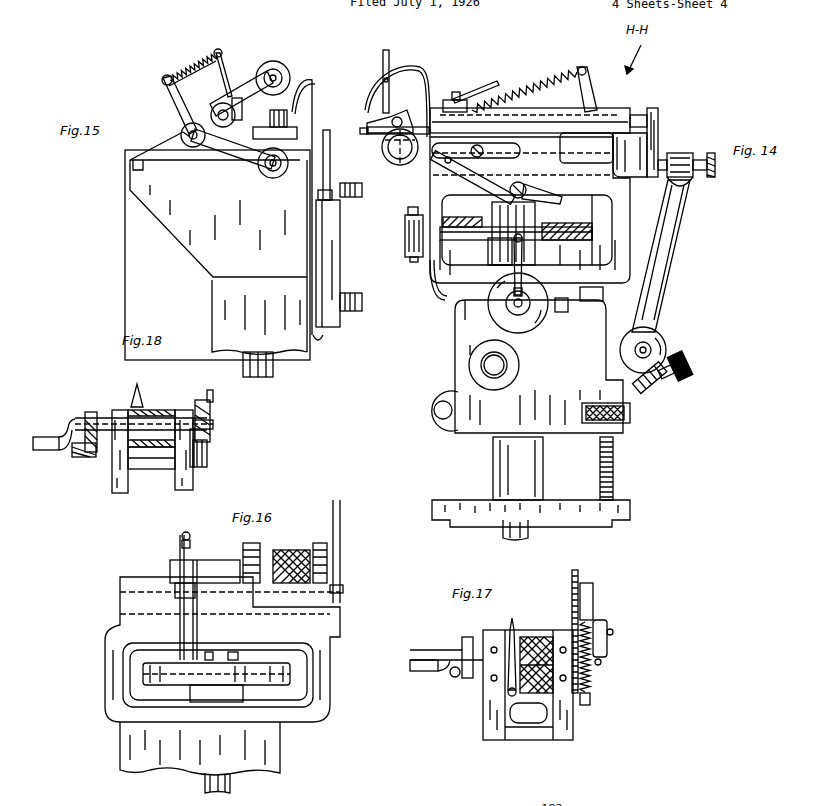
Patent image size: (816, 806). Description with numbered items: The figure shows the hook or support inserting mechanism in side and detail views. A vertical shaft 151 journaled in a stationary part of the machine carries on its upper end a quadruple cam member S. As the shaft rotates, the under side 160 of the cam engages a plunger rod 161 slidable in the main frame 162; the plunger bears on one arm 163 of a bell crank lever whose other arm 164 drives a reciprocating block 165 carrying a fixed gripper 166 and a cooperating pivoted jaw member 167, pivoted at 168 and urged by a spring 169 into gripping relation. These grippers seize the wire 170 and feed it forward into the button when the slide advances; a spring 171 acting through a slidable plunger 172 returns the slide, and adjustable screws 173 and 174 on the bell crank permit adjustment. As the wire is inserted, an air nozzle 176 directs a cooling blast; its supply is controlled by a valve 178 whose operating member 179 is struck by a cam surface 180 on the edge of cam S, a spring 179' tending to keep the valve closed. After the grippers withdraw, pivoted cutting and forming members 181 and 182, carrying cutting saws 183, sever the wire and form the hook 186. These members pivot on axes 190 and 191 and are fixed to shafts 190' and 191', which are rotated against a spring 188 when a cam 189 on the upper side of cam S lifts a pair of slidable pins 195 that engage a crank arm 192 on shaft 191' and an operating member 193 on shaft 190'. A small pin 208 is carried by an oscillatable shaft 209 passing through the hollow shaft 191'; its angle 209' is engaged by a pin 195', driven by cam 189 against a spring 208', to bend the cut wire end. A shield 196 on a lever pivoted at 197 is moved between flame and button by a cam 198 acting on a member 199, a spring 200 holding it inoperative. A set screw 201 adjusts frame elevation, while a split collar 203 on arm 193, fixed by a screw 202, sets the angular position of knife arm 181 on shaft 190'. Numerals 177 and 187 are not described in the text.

In FIG. 15, the vertical shaft 151 is at (276, 368).
In FIG. 16, the under side of cam 160 is at (285, 688).
In FIG. 14, the plunger rod 161 is at (587, 290).
In FIG. 15, the main frame 162 is at (215, 255).
In FIG. 16, the main frame 162 is at (313, 713).
In FIG. 14, the main frame 162 is at (468, 375).
In FIG. 14, the arm of bell crank lever 163 is at (652, 387).
In FIG. 14, the arm of bell crank lever 164 is at (679, 228).
In FIG. 14, the reciprocating block 165 is at (657, 115).
In FIG. 14, the fixed gripper 166 is at (378, 130).
In FIG. 14, the pivoted jaw member 167 is at (372, 116).
In FIG. 14, the pivot 168 is at (393, 118).
In FIG. 14, the spring 169 is at (562, 78).
In FIG. 14, the wire 170 is at (388, 147).
In FIG. 14, the spring 171 is at (486, 150).
In FIG. 14, the slidable plunger 172 is at (633, 178).
In FIG. 14, the adjustable screw 173 is at (702, 153).
In FIG. 14, the adjustable screw 174 is at (690, 370).
In FIG. 14, the air nozzle 176 is at (440, 292).
In FIG. 14, the pivot boss 177 is at (665, 336).
In FIG. 14, the valve 178 is at (500, 326).
In FIG. 14, the valve operating member 179 is at (597, 247).
In FIG. 14, the spring 179' is at (472, 284).
In FIG. 15, the cam surface 180 is at (282, 62).
In FIG. 14, the cam surface 180 is at (588, 189).
In FIG. 15, the pivoted cutting and forming member 181 is at (240, 160).
In FIG. 18, the pivoted cutting and forming member 181 is at (200, 470).
In FIG. 15, the pivoted cutting and forming member 182 is at (240, 100).
In FIG. 18, the pivoted cutting and forming member 182 is at (201, 400).
In FIG. 15, the cutting saws 183 is at (278, 178).
In FIG. 14, the hook 186 is at (362, 135).
In FIG. 15, the cam lever 187 is at (150, 140).
In FIG. 15, the spring 188 is at (184, 72).
In FIG. 16, the cam 189 is at (235, 655).
In FIG. 15, the pivot axis 190 is at (190, 165).
In FIG. 18, the shaft 190' is at (222, 454).
In FIG. 15, the pivot axis 191 is at (211, 100).
In FIG. 18, the hollow shaft 191' is at (152, 431).
In FIG. 18, the crank arm 192 is at (91, 410).
In FIG. 17, the operating member 193 is at (515, 626).
In FIG. 16, the slidable pins 195 is at (264, 716).
In FIG. 16, the pin 195' is at (121, 596).
In FIG. 14, the shield 196 is at (398, 165).
In FIG. 14, the lever pivot 197 is at (525, 165).
In FIG. 14, the cam 198 is at (486, 241).
In FIG. 14, the member on lever 199 is at (488, 200).
In FIG. 14, the spring 200 is at (555, 236).
In FIG. 14, the set screw 201 is at (626, 420).
In FIG. 17, the screw 202 is at (512, 698).
In FIG. 18, the adjustable split collar 203 is at (150, 470).
In FIG. 17, the adjustable split collar 203 is at (505, 688).
In FIG. 15, the pin 208 is at (249, 115).
In FIG. 18, the pin 208 is at (226, 397).
In FIG. 15, the spring 208' is at (229, 63).
In FIG. 18, the oscillatable shaft 209 is at (165, 427).
In FIG. 18, the angle 209' is at (54, 452).
In FIG. 16, the quadruple cam member S is at (150, 680).